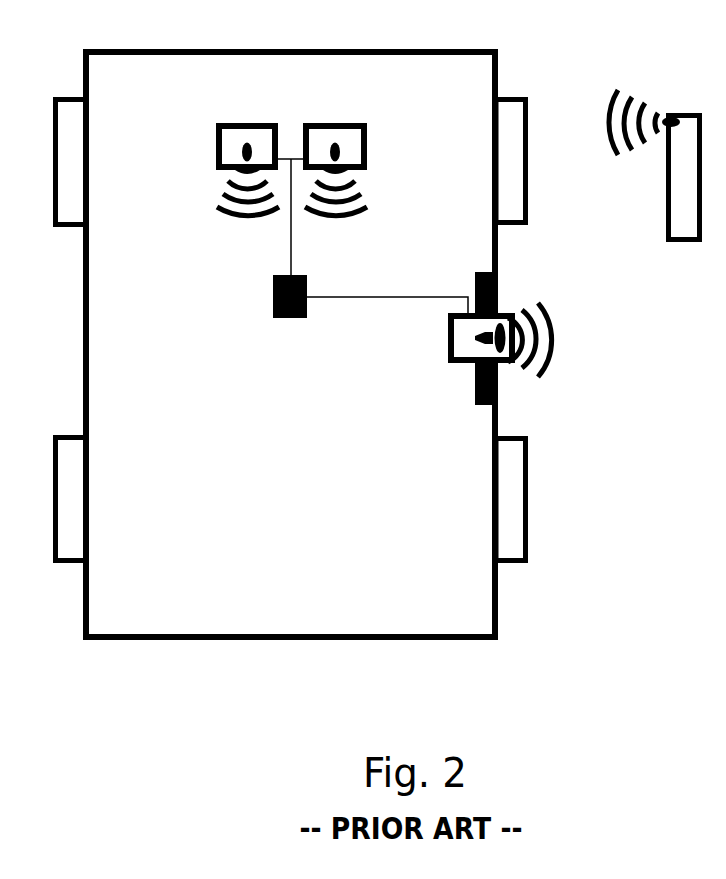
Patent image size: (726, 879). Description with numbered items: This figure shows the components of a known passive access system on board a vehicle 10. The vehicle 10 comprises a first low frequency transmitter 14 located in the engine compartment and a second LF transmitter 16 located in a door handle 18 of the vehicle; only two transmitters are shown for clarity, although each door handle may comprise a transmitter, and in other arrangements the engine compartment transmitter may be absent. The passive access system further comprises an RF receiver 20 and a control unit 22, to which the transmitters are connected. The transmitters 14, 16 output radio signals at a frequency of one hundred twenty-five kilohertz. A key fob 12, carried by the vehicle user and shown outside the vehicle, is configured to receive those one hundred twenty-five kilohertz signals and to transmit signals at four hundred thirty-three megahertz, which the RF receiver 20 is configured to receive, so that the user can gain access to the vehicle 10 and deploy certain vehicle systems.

The vehicle 10 is at (275, 639).
The key fob 12 is at (683, 111).
The first low frequency (LF) transmitter 14 is at (335, 122).
The second LF transmitter 16 is at (502, 364).
The door handle 18 is at (493, 278).
The RF receiver 20 is at (248, 122).
The control unit 22 is at (289, 320).